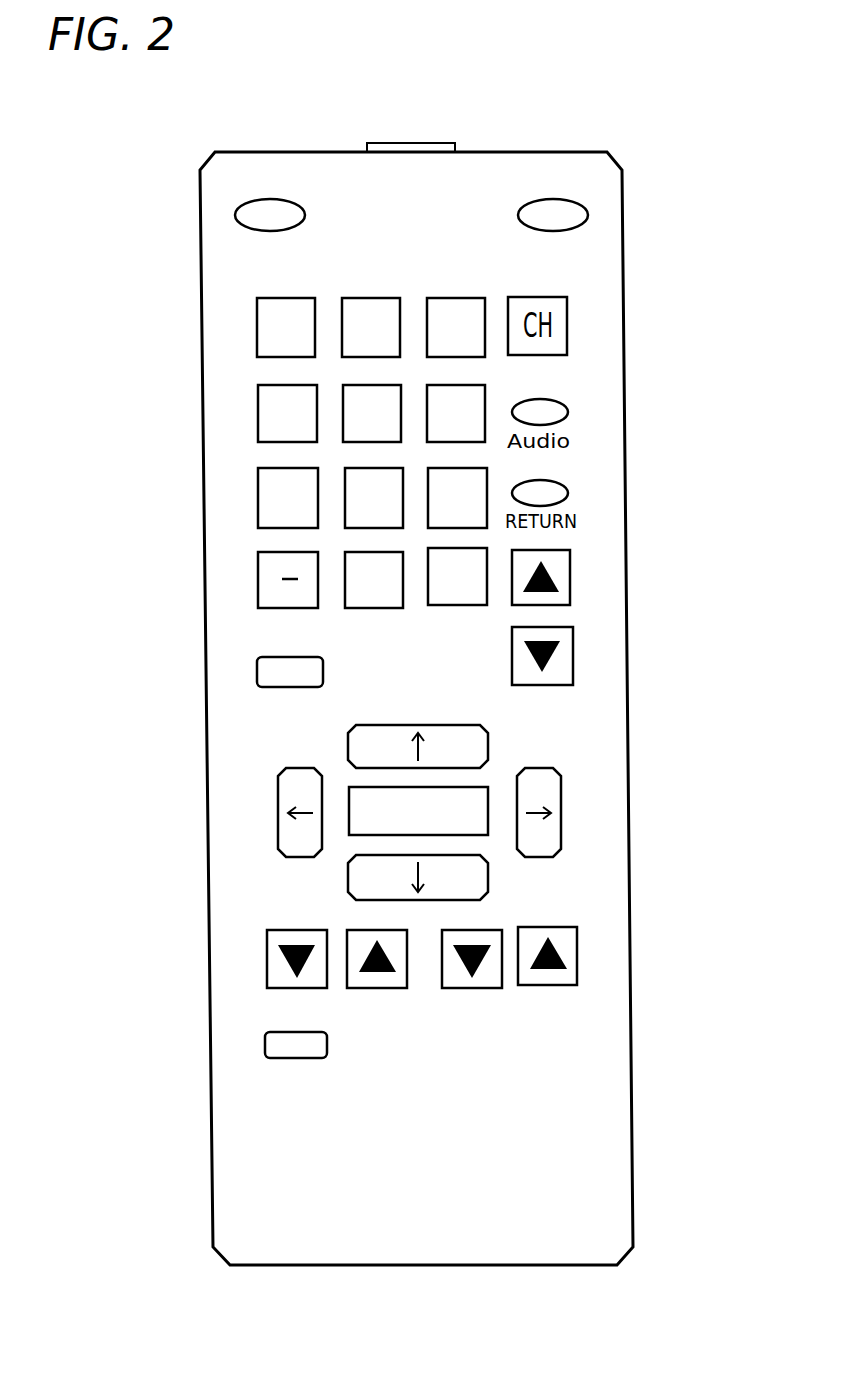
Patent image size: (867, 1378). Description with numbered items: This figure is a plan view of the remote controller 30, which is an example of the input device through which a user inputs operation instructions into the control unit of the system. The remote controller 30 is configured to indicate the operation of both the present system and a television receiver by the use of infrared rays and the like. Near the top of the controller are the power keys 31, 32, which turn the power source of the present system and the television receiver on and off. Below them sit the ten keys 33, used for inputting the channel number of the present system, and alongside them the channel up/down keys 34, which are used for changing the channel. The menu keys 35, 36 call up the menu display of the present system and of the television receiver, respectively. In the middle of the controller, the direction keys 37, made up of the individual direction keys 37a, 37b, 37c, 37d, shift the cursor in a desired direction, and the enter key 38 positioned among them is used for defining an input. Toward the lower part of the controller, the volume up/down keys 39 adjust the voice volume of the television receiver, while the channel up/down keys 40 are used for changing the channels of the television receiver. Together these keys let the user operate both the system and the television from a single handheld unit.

The remote controller 30 is at (435, 71).
The power key 31 is at (552, 196).
The power key 32 is at (273, 198).
The ten keys 33 is at (322, 451).
The channel up/down keys 34 is at (593, 614).
The menu key 35 is at (257, 673).
The menu key 36 is at (265, 1045).
The direction keys 37 is at (582, 832).
The direction key 37a is at (488, 743).
The direction key 37b is at (488, 875).
The direction key 37c is at (278, 813).
The direction key 37d is at (561, 792).
The enter key 38 is at (358, 835).
The volume up/down keys 39 is at (338, 997).
The channel up/down keys 40 is at (511, 996).